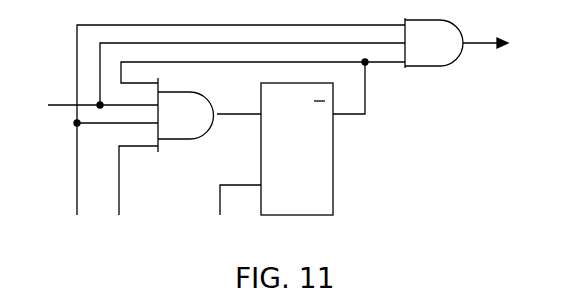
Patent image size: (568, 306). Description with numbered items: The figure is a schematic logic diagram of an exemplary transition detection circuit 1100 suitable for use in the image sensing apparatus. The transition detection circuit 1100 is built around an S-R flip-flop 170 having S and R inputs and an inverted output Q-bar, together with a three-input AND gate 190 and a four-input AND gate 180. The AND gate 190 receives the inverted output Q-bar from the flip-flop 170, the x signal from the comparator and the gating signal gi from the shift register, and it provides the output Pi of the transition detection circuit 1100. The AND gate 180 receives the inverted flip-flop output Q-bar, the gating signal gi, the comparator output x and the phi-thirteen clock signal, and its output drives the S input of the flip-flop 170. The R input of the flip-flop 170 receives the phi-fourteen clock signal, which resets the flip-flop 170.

The S-R flip-flop 170 is at (333, 168).
The 4-input AND gate 180 is at (190, 139).
The 3-input AND gate 190 is at (438, 66).
The transition detection circuit 1100 is at (276, 133).